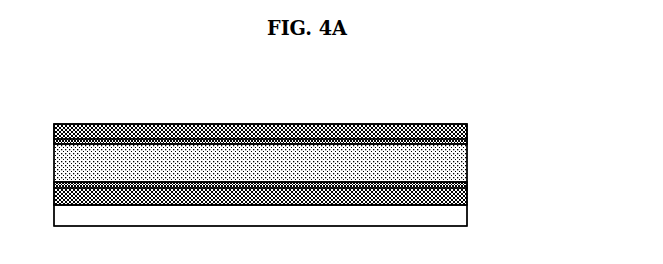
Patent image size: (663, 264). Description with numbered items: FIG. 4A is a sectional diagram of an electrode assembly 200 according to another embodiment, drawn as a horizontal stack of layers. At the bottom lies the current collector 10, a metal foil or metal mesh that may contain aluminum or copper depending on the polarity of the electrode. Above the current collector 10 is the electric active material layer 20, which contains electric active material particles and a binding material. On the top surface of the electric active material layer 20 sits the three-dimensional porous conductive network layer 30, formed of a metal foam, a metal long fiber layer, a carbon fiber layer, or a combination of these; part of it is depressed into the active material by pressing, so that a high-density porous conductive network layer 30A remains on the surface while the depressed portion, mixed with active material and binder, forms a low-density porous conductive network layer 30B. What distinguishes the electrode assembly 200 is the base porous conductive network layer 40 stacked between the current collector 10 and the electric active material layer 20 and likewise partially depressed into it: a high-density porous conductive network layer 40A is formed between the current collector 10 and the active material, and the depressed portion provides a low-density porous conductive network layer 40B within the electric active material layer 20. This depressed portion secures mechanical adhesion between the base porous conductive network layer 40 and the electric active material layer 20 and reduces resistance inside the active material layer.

The electrode assembly 200 is at (415, 95).
The 3-dimensional porous conductive network layer 30 is at (330, 132).
The high-density porous conductive network layer 30A is at (467, 131).
The low-density porous conductive network layer 30B is at (467, 142).
The electric active material layer 20 is at (467, 161).
The base porous conductive network layer 40 is at (330, 206).
The low-density porous conductive network layer 40B is at (467, 183).
The high-density porous conductive network layer 40A is at (467, 196).
The current collector 10 is at (467, 215).